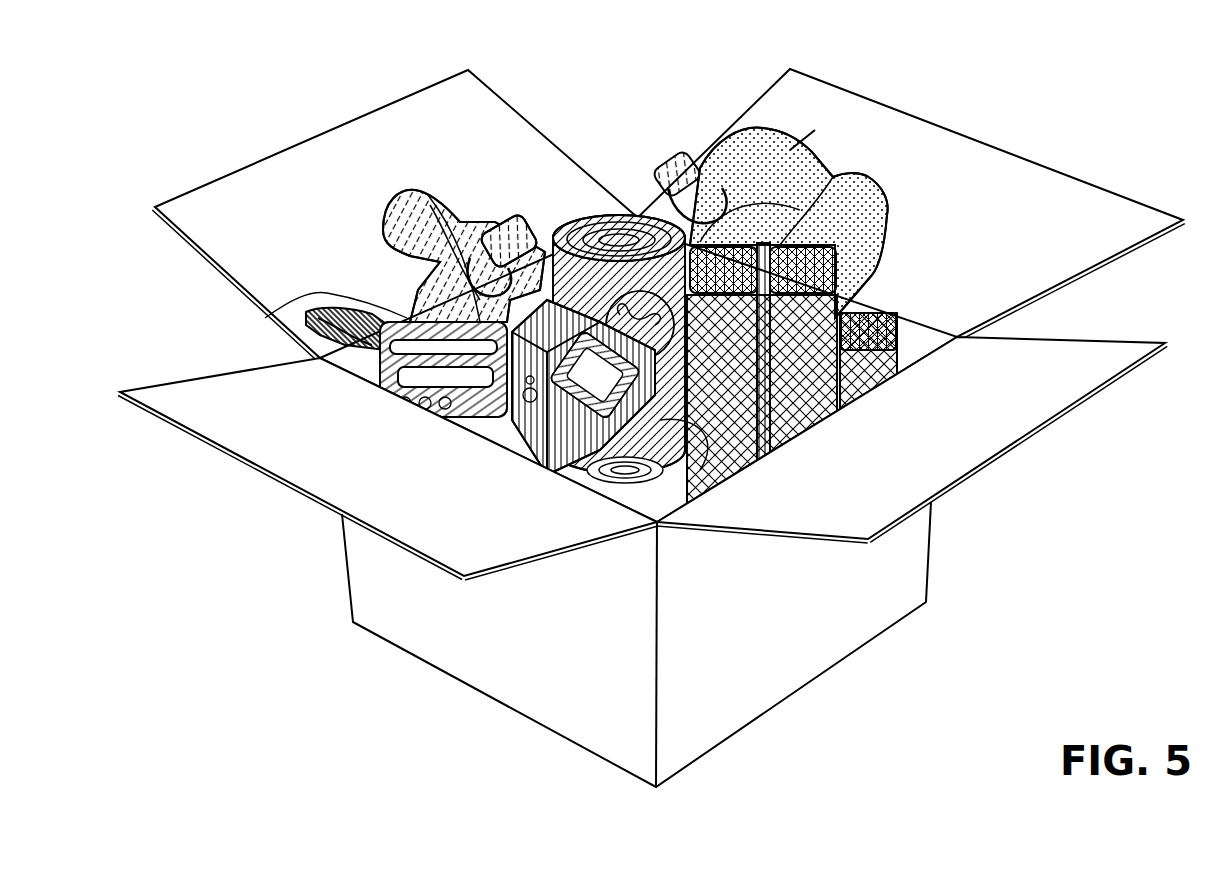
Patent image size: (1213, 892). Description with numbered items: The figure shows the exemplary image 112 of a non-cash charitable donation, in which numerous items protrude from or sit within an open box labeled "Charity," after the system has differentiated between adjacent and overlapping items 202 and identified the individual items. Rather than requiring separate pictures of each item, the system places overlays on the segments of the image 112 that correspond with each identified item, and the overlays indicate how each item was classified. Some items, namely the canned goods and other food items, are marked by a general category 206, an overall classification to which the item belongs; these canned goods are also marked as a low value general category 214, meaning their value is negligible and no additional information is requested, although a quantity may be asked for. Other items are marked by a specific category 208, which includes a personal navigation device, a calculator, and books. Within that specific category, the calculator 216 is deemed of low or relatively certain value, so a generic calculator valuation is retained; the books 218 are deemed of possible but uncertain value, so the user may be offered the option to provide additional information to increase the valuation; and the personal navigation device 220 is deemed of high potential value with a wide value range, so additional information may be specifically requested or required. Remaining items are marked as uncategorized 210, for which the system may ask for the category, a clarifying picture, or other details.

The exemplary image 112 is at (661, 208).
The differentiation between adjacent and/or overlapping items 202 is at (942, 238).
The general category items 206 is at (574, 297).
The specific category items 208 is at (722, 376).
The uncategorized items 210 is at (363, 233).
The low value general category items 214 is at (620, 240).
The calculator 216 is at (310, 297).
The books 218 is at (887, 378).
The personal navigation device 220 is at (553, 470).